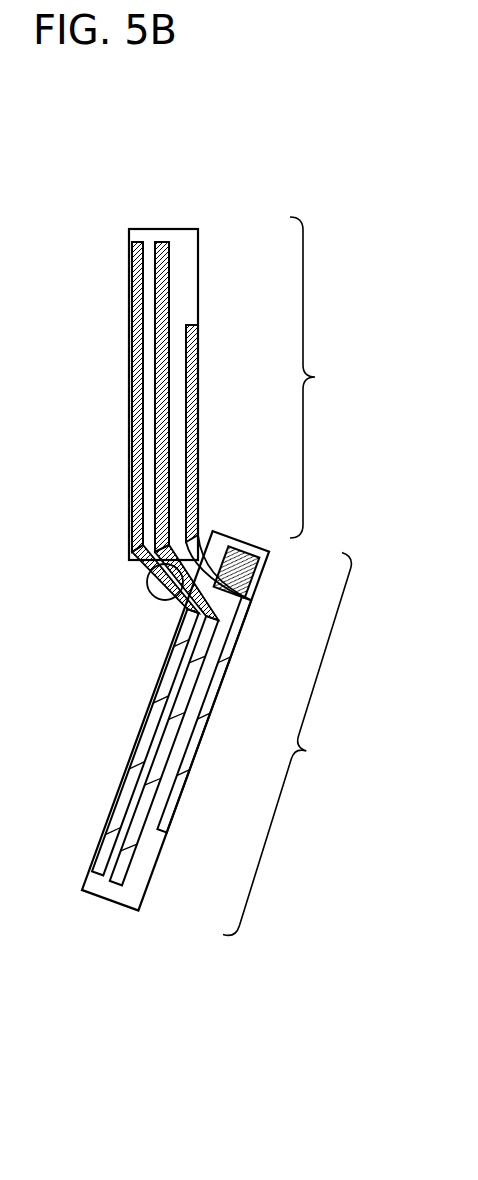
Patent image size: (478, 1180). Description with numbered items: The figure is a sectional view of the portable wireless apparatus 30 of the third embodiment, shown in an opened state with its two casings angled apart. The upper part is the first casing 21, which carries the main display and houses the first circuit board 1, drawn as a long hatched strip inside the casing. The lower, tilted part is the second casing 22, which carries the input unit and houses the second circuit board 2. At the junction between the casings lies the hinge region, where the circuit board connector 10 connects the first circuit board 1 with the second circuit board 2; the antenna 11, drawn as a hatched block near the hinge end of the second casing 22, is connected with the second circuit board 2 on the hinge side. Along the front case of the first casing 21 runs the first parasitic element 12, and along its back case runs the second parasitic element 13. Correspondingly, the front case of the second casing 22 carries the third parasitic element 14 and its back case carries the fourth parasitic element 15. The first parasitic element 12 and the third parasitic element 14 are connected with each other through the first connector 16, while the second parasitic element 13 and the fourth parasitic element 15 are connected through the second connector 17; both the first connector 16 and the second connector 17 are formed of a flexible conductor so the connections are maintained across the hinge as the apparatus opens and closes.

The portable wireless apparatus 30 is at (220, 217).
The first casing 21 is at (244, 388).
The second casing 22 is at (224, 736).
The first circuit board 1 is at (166, 240).
The second circuit board 2 is at (132, 833).
The circuit board connector 10 is at (145, 573).
The antenna 11 is at (237, 575).
The first parasitic element 12 is at (132, 418).
The second parasitic element 13 is at (198, 347).
The third parasitic element 14 is at (95, 845).
The fourth parasitic element 15 is at (210, 695).
The first connector 16 is at (150, 582).
The second connector 17 is at (177, 603).